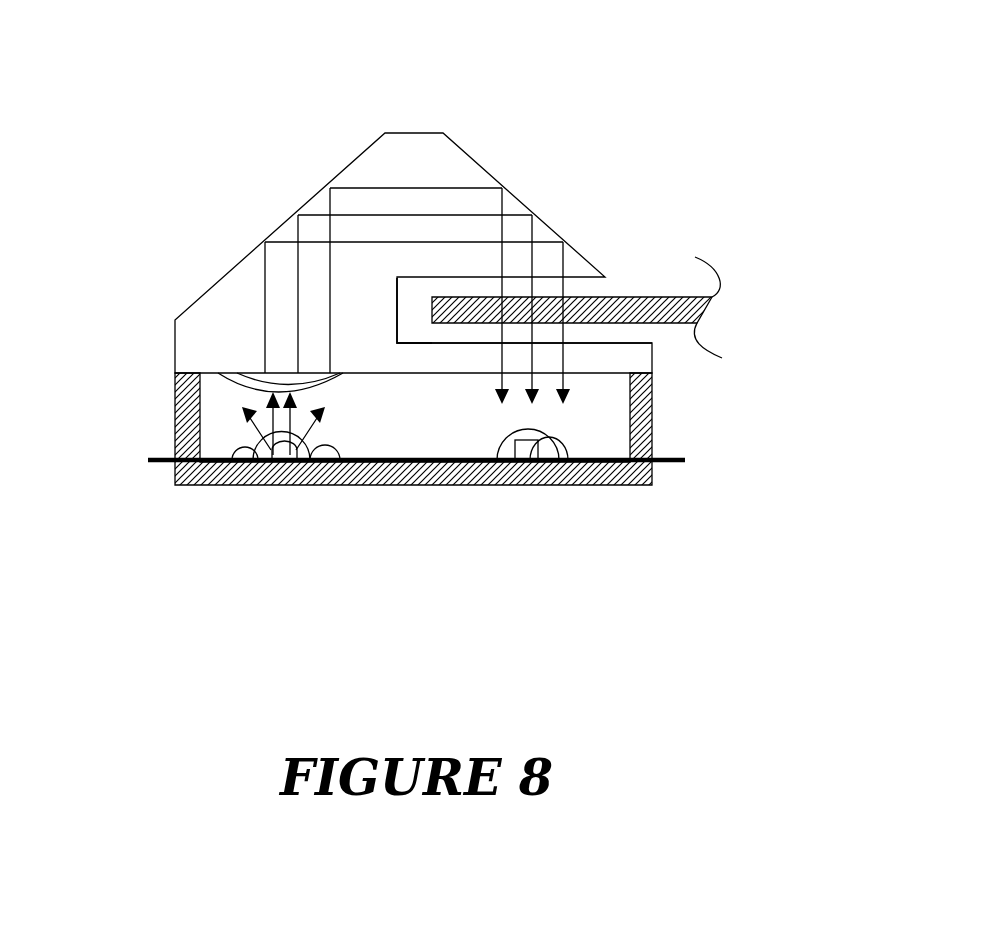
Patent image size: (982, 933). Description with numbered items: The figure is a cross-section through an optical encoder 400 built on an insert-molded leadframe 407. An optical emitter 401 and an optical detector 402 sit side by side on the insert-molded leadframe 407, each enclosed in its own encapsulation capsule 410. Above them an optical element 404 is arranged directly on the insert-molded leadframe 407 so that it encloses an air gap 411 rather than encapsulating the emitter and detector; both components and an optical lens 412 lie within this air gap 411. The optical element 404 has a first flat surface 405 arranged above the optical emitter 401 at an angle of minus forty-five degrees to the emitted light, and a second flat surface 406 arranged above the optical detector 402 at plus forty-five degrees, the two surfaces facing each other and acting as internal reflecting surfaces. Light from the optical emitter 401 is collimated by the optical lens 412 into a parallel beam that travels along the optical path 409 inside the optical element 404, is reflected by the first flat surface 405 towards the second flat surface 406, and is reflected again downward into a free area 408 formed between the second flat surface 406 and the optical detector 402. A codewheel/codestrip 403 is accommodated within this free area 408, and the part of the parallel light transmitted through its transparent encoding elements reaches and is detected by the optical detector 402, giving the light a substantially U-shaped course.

The optical encoder 400 is at (732, 87).
The optical emitter 401 is at (230, 462).
The optical detector 402 is at (578, 462).
The codewheel/codestrip 403 is at (673, 295).
The optical element 404 is at (217, 352).
The first flat surface 405 is at (248, 253).
The second flat surface 406 is at (483, 166).
The insert-molded leadframe 407 is at (663, 462).
The free area 408 is at (415, 308).
The optical path 409 is at (567, 347).
The encapsulation capsule 410 is at (350, 462).
The air gap 411 is at (557, 422).
The optical lens 412 is at (218, 376).